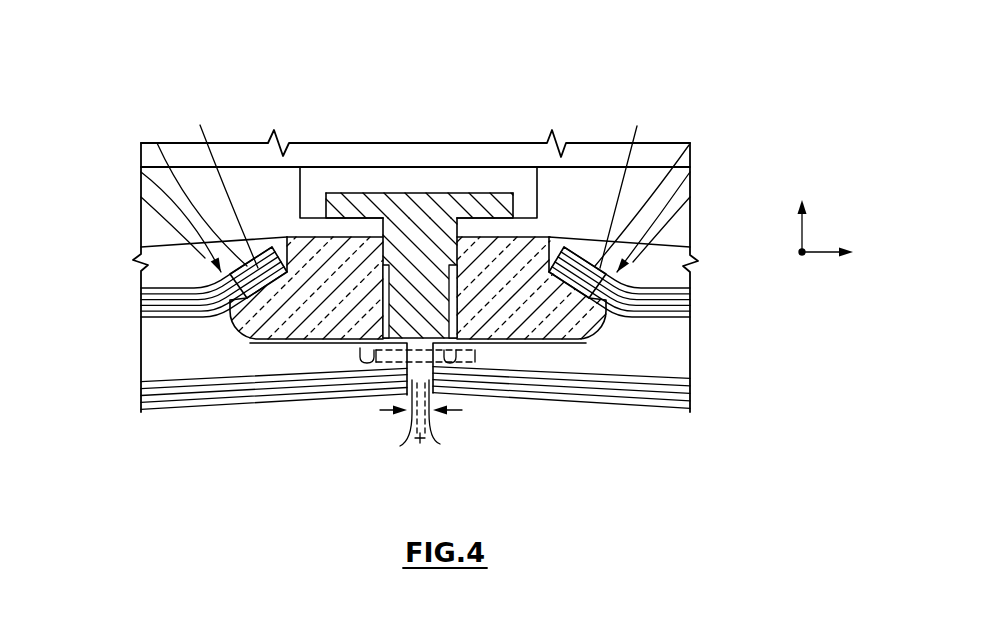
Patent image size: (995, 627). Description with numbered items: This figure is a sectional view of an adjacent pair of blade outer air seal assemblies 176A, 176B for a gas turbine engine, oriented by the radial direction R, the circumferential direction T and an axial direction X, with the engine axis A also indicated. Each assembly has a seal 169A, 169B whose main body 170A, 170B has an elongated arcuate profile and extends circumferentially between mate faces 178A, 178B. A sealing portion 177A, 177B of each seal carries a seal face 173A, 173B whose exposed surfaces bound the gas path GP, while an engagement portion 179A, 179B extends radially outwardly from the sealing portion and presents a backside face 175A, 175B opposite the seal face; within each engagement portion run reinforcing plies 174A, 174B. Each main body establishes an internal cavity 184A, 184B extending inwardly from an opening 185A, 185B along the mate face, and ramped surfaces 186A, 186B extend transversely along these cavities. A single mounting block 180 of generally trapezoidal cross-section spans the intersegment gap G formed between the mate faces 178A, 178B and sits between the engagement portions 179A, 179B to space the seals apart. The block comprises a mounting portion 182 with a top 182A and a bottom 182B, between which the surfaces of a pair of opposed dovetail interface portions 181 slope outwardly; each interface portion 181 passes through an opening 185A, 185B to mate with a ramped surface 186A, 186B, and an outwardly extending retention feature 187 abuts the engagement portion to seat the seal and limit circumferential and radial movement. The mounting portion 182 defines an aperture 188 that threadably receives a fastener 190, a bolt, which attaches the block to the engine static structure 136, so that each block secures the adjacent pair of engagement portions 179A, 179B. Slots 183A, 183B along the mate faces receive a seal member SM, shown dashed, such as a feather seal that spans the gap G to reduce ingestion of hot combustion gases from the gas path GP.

The engine static structure 136 is at (415, 243).
The first seal 169A is at (141, 197).
The second seal 169B is at (690, 197).
The main body of first seal 170A is at (141, 313).
The main body of second seal 170B is at (690, 313).
The seal face of first seal 173A is at (153, 412).
The seal face of second seal 173B is at (690, 412).
The first fiber ply bundle 174A is at (205, 281).
The second fiber ply bundle 174B is at (680, 282).
The backside face of first seal 175A is at (141, 288).
The backside face of second seal 175B is at (690, 288).
The first seal assembly 176A is at (146, 240).
The second seal assembly 176B is at (692, 238).
The sealing portion of first seal 177A is at (204, 405).
The sealing portion of second seal 177B is at (587, 400).
The mate face of first seal 178A is at (400, 446).
The mate face of second seal 178B is at (440, 444).
The engagement portion of first seal 179A is at (200, 125).
The engagement portion of second seal 179B is at (637, 126).
The mounting block 180 is at (528, 192).
The interface portion 181 is at (141, 172).
The mounting portion 182 is at (294, 192).
The top of mounting portion 182A is at (372, 193).
The bottom of mounting portion 182B is at (323, 343).
The slot of first seal 183A is at (360, 350).
The slot of second seal 183B is at (456, 350).
The internal cavity of first seal 184A is at (212, 378).
The internal cavity of second seal 184B is at (672, 384).
The opening of first seal 185A is at (415, 338).
The opening of second seal 185B is at (422, 338).
The ramped surface of first seal 186A is at (157, 143).
The ramped surface of second seal 186B is at (690, 145).
The retention feature 187 is at (287, 240).
The aperture 188 is at (386, 250).
The fastener 190 is at (455, 178).
The intersegment gap G is at (376, 412).
The engine axis A is at (421, 444).
The seal member SM is at (477, 351).
The gas path GP is at (577, 488).
The radial direction R is at (802, 212).
The circumferential direction T is at (834, 252).
The axial direction X is at (802, 256).